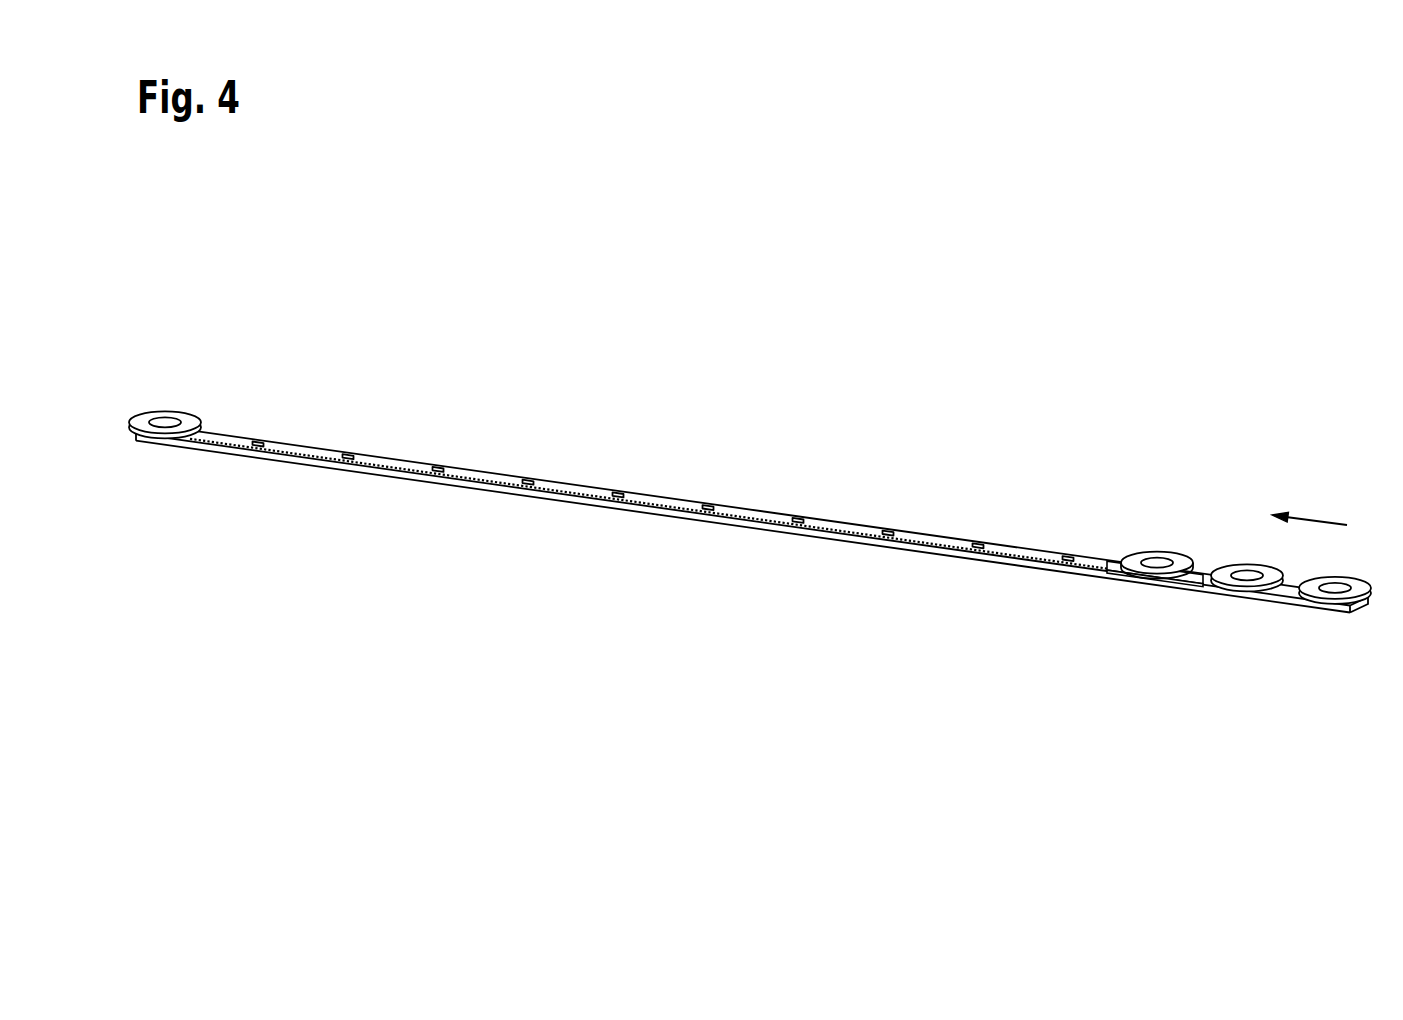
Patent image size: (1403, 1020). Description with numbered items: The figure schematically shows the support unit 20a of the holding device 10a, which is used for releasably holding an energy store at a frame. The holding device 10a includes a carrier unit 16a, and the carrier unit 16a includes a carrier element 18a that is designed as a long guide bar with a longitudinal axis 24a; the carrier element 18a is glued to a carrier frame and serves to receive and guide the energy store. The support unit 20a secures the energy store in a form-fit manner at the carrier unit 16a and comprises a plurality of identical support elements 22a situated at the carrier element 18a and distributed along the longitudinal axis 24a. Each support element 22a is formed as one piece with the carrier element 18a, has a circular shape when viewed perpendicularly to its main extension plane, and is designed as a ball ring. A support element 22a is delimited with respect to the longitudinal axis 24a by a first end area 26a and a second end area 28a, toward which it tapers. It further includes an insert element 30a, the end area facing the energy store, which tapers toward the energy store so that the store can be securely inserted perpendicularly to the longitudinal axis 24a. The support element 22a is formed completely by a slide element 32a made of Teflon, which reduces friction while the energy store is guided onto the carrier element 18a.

The holding device 10a is at (473, 675).
The carrier unit 16a is at (690, 689).
The carrier element 18a is at (663, 500).
The support unit 20a is at (565, 690).
The support element 22a is at (1157, 563).
The longitudinal axis 24a is at (1320, 520).
The first end area 26a is at (1109, 568).
The second end area 28a is at (1197, 574).
The insert element 30a is at (1155, 570).
The slide element 32a is at (1160, 523).